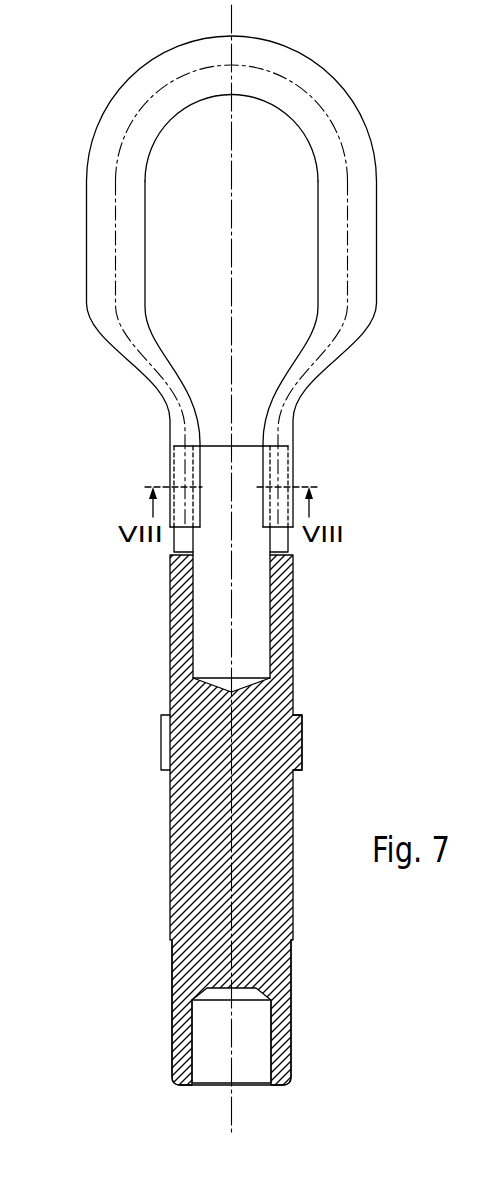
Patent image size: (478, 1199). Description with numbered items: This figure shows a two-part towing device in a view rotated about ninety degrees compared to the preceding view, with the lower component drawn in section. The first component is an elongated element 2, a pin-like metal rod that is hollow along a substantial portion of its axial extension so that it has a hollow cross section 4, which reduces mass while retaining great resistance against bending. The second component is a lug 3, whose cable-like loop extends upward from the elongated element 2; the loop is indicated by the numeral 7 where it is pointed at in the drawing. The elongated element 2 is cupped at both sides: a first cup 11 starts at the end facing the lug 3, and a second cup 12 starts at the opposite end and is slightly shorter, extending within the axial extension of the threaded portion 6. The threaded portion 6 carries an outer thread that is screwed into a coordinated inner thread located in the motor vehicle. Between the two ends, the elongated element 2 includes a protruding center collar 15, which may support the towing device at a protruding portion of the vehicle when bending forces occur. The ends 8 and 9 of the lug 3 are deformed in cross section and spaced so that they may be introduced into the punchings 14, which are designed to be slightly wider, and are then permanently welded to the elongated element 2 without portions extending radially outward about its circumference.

The elongated element 2 is at (293, 678).
The lug 3 is at (378, 278).
The hollow cross section 4 is at (255, 637).
The threaded portion 6 is at (287, 1027).
The cable 7 is at (368, 231).
The end of the lug 8 is at (177, 422).
The end of the lug 9 is at (283, 430).
The first cup 11 is at (205, 593).
The second cup 12 is at (253, 1063).
The punchings 14 is at (178, 545).
The protruding center collar 15 is at (297, 740).